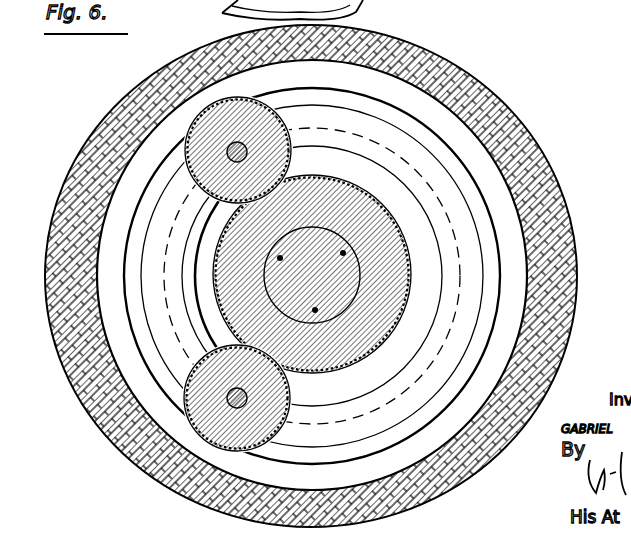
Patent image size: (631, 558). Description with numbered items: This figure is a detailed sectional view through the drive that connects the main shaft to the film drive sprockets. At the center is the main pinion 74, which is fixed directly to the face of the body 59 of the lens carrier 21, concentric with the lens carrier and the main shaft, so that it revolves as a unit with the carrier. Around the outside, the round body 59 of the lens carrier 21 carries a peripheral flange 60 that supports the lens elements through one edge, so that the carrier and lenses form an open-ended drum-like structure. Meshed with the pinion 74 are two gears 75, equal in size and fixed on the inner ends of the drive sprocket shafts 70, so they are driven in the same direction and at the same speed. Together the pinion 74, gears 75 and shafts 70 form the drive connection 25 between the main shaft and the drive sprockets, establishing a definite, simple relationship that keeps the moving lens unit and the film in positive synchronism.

The lens carrier 21 is at (522, 132).
The peripheral flange 60 is at (557, 263).
The body of the lens carrier 59 is at (511, 336).
The drive connection 25 is at (172, 371).
The gears 75 is at (282, 104).
The main pinion 74 is at (377, 218).
The drive sprocket shafts 70 is at (229, 152).